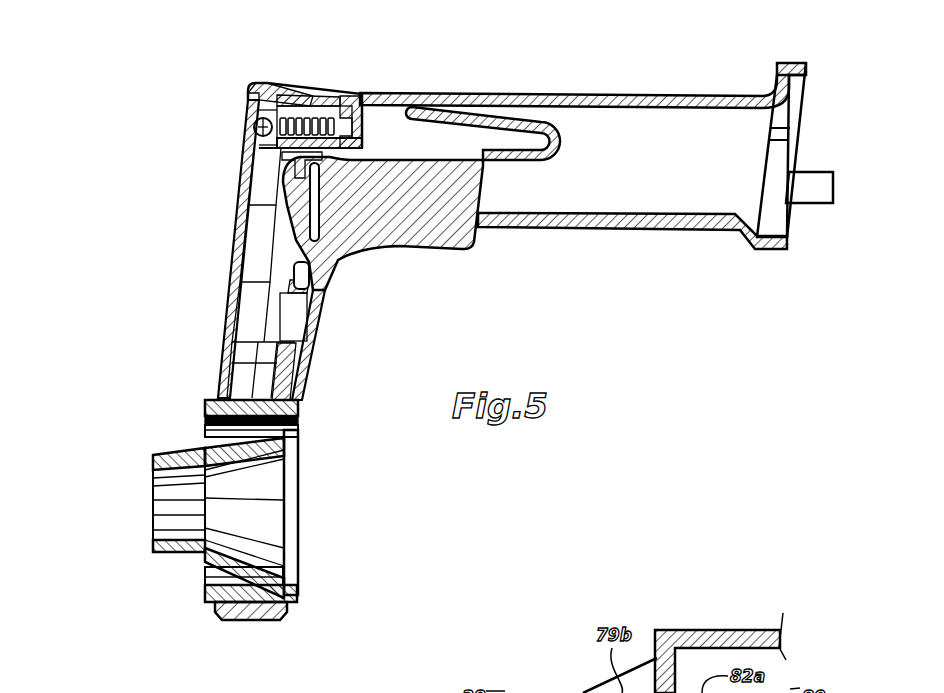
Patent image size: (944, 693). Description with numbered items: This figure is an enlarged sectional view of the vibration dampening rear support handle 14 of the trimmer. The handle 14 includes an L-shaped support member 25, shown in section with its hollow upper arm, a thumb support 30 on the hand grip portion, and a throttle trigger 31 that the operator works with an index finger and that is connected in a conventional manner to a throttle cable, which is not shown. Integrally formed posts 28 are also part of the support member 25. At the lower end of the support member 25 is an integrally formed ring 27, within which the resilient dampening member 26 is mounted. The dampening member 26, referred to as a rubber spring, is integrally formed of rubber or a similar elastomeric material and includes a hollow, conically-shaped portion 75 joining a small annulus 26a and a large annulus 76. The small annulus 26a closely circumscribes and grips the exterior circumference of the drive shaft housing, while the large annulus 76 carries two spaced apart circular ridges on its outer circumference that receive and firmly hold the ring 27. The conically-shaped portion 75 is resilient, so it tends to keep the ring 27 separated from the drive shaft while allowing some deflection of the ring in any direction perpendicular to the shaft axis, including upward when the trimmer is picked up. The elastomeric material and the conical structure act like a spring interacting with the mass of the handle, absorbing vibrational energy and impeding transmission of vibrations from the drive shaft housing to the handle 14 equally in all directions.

The rear support handle 14 is at (462, 58).
The L-shaped support member 25 is at (620, 93).
The resilient dampening member 26 is at (164, 600).
The small annulus 26a is at (153, 548).
The ring 27 is at (213, 400).
The posts 28 is at (810, 171).
The thumb support 30 is at (257, 84).
The throttle trigger 31 is at (400, 254).
The conically-shaped portion 75 is at (205, 435).
The large annulus 76 is at (205, 418).